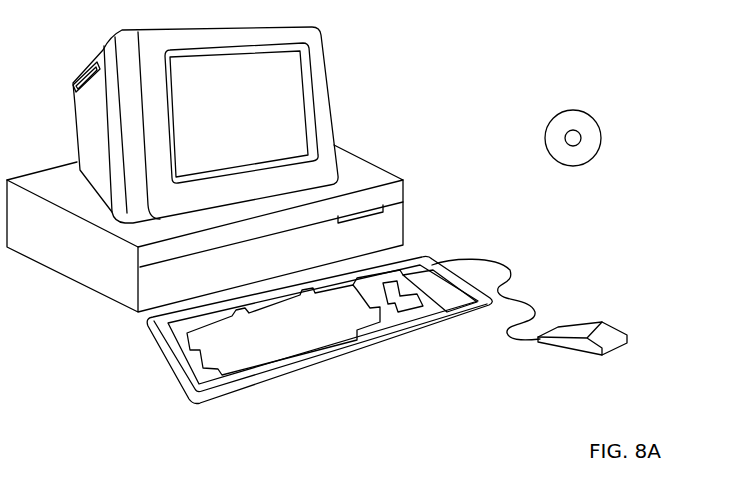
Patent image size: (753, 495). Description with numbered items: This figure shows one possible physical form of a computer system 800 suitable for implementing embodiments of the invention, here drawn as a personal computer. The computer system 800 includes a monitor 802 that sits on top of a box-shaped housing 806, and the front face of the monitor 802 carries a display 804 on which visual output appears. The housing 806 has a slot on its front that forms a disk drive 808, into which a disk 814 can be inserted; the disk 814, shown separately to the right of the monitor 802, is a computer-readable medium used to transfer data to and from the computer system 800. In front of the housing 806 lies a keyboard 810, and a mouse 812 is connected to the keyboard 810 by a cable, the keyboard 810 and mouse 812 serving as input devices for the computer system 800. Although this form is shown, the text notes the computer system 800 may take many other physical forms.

The computer system 800 is at (432, 38).
The monitor 802 is at (332, 123).
The display 804 is at (297, 80).
The housing 806 is at (93, 297).
The disk drive 808 is at (383, 205).
The keyboard 810 is at (335, 368).
The mouse 812 is at (606, 322).
The disk 814 is at (587, 112).